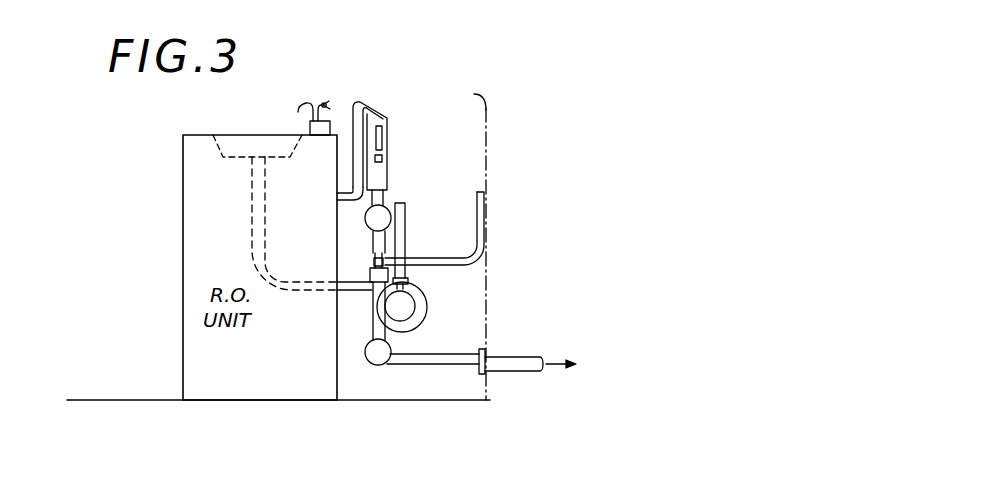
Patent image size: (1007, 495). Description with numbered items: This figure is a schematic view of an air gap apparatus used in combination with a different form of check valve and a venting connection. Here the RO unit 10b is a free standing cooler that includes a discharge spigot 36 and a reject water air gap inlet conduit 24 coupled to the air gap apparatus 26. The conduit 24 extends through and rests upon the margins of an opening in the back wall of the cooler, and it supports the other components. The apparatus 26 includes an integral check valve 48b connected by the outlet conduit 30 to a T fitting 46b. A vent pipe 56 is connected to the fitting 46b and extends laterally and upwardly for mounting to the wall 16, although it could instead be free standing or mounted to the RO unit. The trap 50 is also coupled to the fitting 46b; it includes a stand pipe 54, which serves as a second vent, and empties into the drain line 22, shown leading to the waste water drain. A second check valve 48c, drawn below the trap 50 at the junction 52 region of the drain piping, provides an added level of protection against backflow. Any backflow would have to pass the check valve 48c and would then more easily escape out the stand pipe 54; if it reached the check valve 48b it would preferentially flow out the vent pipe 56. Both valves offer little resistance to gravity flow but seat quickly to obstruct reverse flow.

The RO unit 10b is at (223, 134).
The discharge spigot 36 is at (311, 103).
The reject water air gap inlet conduit 24 is at (348, 199).
The air gap apparatus 26 is at (372, 110).
The check valve 48b is at (386, 207).
The outlet conduit 30 is at (376, 237).
The T fitting 46b is at (374, 265).
The stand pipe 54 is at (405, 212).
The vent pipe 56 is at (486, 203).
The wall 16 is at (474, 94).
The pump inlet 52 is at (406, 290).
The trap 50 is at (427, 316).
The second check valve 48c is at (372, 365).
The drain line 22 is at (517, 356).